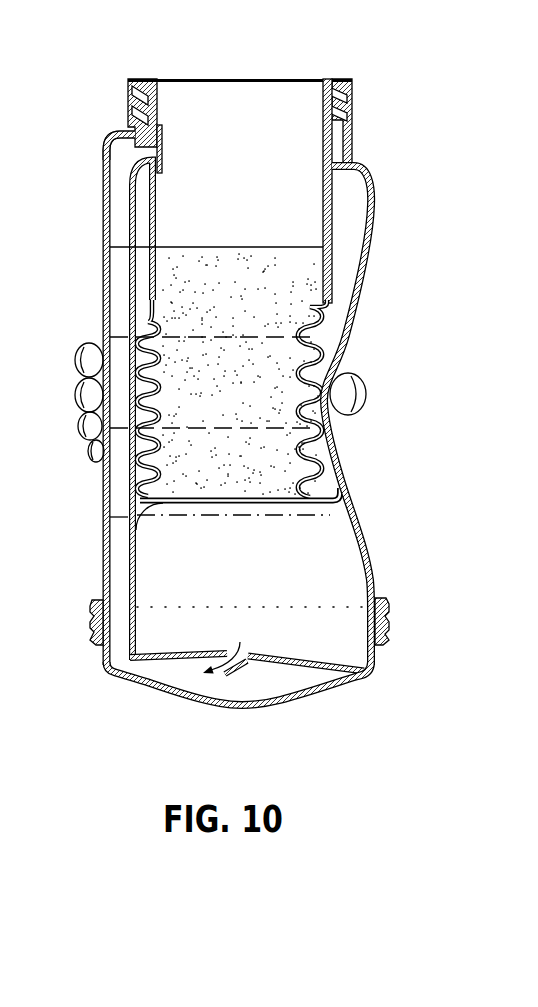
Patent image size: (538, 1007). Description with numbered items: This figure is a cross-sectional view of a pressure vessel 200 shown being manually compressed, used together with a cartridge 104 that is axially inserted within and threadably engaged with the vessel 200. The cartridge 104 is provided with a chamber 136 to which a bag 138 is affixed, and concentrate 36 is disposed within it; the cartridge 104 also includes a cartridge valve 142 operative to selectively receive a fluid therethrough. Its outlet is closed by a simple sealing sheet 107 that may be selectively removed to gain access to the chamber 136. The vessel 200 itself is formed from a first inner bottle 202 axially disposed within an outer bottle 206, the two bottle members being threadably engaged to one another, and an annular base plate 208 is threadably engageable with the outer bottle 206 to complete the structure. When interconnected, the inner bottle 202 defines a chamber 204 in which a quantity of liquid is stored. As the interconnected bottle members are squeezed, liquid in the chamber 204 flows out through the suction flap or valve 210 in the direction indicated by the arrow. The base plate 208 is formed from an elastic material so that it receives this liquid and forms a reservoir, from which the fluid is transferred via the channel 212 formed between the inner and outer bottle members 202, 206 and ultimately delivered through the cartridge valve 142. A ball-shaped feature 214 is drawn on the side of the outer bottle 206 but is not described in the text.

The cartridge 104 is at (128, 80).
The sealing sheet 107 is at (198, 78).
The chamber 136 is at (292, 90).
The cartridge valve 142 is at (110, 147).
The concentrate 36 is at (182, 252).
The channel 212 is at (118, 273).
The outer bottle 206 is at (103, 493).
The ball detent 214 is at (367, 392).
The bag 138 is at (130, 527).
The inner bottle 202 is at (128, 560).
The chamber 204 is at (330, 535).
The annular base plate 208 is at (202, 709).
The suction flap or valve 210 is at (240, 668).
The pressure vessel 200 is at (393, 684).